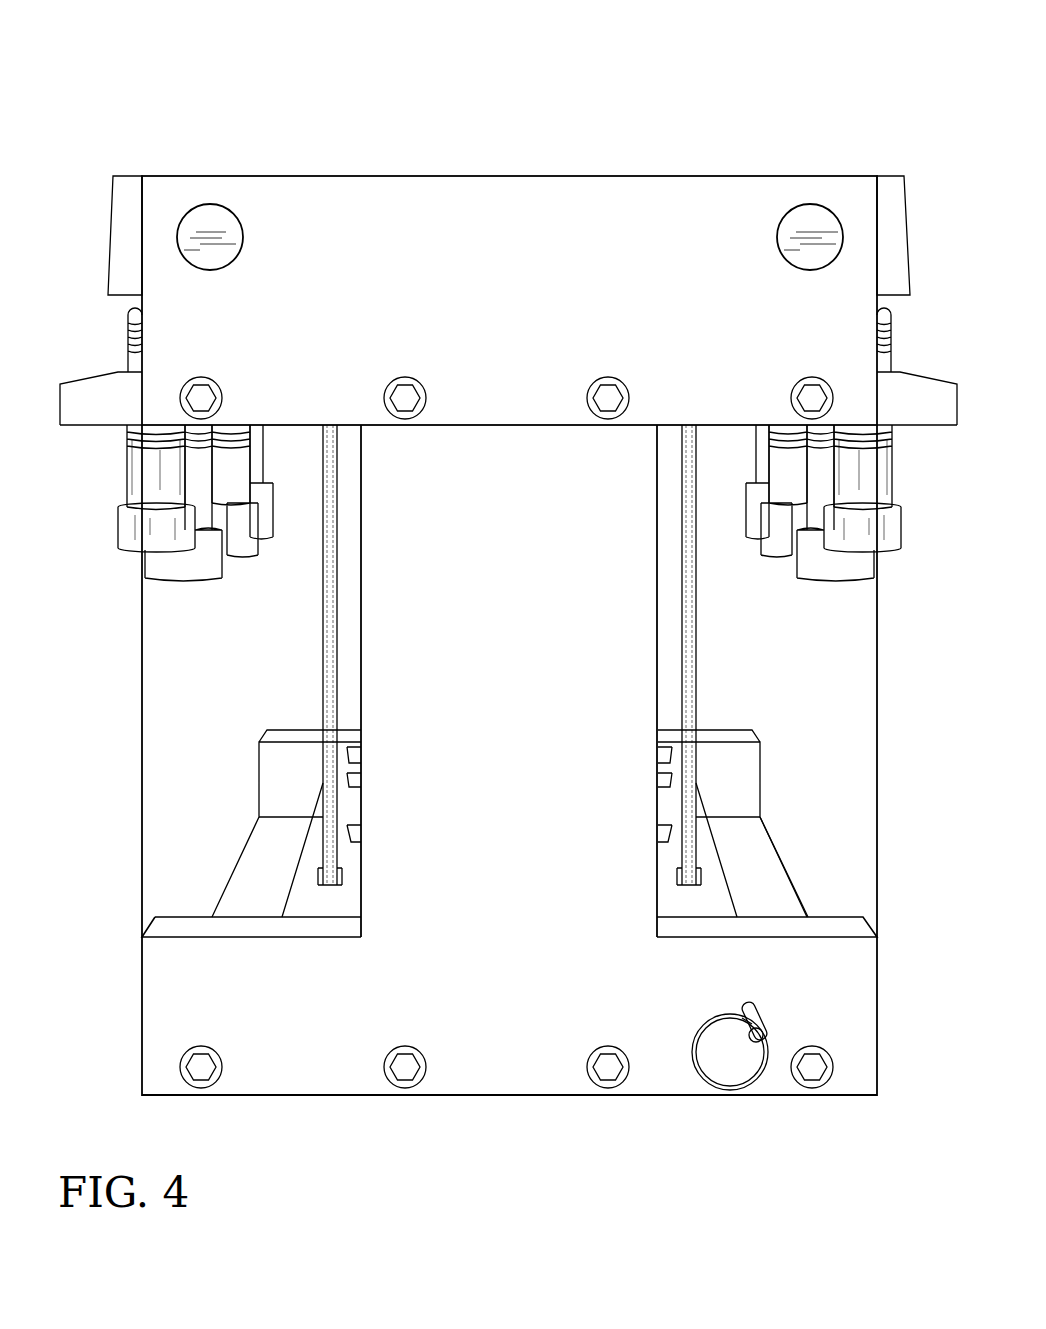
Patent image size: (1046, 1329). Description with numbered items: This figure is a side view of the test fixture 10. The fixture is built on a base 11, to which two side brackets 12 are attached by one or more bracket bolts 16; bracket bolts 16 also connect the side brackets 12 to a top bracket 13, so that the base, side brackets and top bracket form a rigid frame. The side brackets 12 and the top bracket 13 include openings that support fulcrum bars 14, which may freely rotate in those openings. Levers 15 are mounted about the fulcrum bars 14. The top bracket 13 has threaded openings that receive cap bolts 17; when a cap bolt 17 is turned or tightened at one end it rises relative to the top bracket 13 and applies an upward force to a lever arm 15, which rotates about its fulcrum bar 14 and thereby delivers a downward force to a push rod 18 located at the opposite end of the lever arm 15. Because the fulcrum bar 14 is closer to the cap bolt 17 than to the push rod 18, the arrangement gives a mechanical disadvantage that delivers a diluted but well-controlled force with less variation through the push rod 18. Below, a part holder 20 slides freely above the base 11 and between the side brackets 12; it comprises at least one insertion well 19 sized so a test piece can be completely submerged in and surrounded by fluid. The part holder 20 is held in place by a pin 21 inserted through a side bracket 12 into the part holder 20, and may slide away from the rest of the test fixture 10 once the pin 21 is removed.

The test fixture 10 is at (812, 88).
The base 11 is at (797, 912).
The side brackets 12 is at (877, 1040).
The top bracket 13 is at (80, 430).
The fulcrum bars 14 is at (222, 220).
The levers 15 is at (115, 236).
The bracket bolts 16 is at (182, 393).
The cap bolts 17 is at (145, 553).
The push rods 18 is at (330, 680).
The insertion wells 19 is at (318, 887).
The part holder 20 is at (715, 840).
The pin 21 is at (760, 1075).